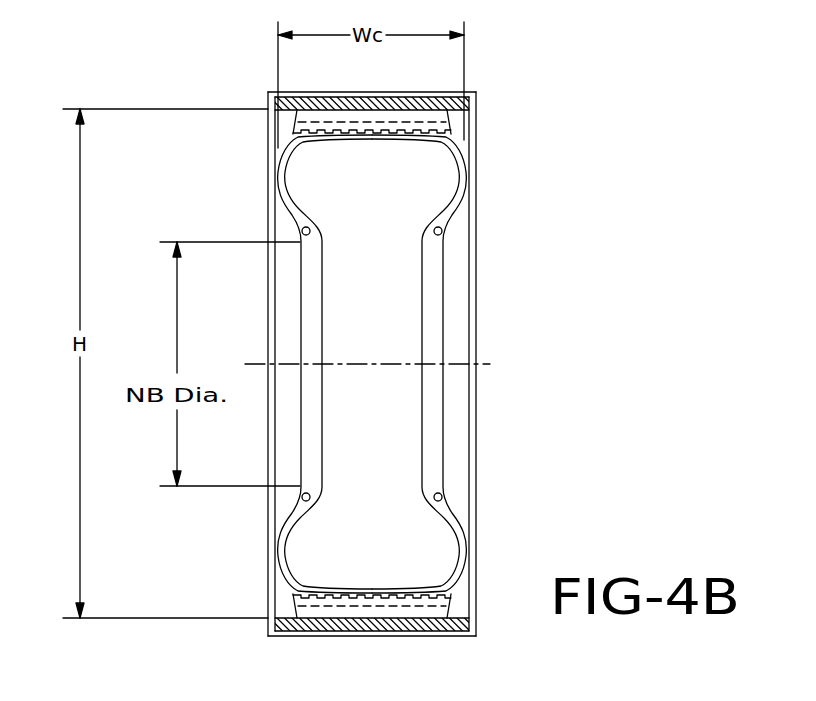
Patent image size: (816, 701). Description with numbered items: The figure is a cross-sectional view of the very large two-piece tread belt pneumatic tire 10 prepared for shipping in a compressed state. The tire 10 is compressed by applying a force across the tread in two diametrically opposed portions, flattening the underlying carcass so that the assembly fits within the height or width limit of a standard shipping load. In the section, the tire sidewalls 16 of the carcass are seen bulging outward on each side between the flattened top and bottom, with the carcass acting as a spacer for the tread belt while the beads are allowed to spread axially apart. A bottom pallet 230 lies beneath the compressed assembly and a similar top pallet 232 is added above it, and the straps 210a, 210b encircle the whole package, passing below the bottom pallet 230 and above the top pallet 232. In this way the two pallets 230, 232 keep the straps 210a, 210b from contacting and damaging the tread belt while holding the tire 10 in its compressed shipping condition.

The tread belt pneumatic tire 10 is at (371, 356).
The tire sidewalls 16 is at (278, 182).
The strap 210a is at (268, 142).
The strap 210b is at (475, 448).
The bottom pallet 230 is at (293, 627).
The top pallet 232 is at (443, 102).